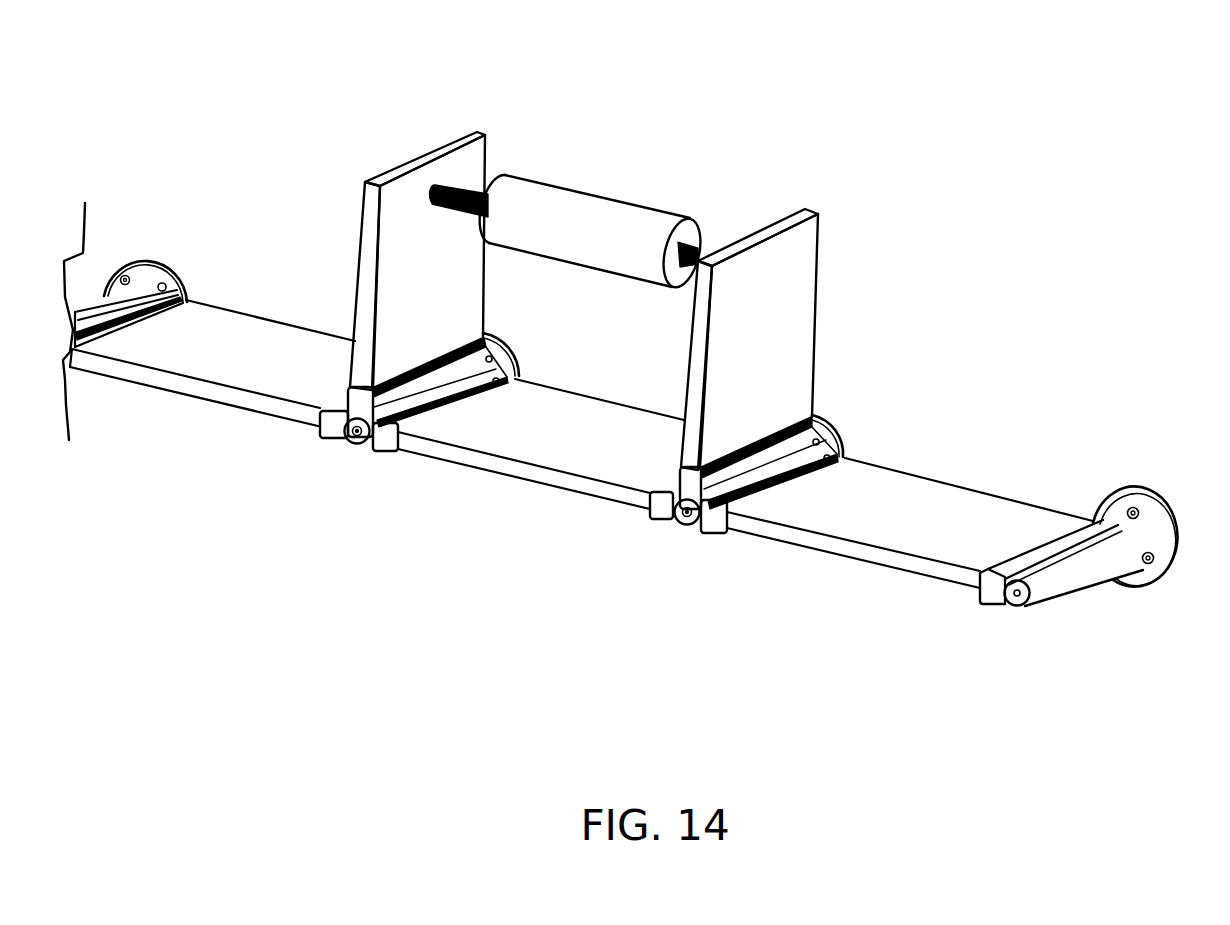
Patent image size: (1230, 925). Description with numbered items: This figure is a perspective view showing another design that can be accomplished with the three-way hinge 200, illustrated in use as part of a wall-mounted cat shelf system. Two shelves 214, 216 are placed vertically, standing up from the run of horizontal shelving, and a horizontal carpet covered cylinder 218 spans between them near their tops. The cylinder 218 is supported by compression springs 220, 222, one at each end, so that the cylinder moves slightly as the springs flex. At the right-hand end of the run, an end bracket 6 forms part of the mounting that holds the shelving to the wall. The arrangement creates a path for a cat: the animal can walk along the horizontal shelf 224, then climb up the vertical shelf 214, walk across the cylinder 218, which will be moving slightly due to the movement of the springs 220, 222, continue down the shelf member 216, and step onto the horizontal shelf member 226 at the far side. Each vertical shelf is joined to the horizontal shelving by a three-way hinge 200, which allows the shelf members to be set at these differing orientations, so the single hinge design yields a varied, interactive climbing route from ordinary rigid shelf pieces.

The end bracket 6 is at (1022, 613).
The three-way hinge 200 is at (300, 477).
The shelf 214 is at (797, 327).
The shelf 216 is at (360, 256).
The carpet covered cylinder 218 is at (608, 213).
The compression spring 220 is at (704, 249).
The compression spring 222 is at (478, 187).
The horizontal shelf 224 is at (913, 540).
The horizontal shelf member 226 is at (245, 362).